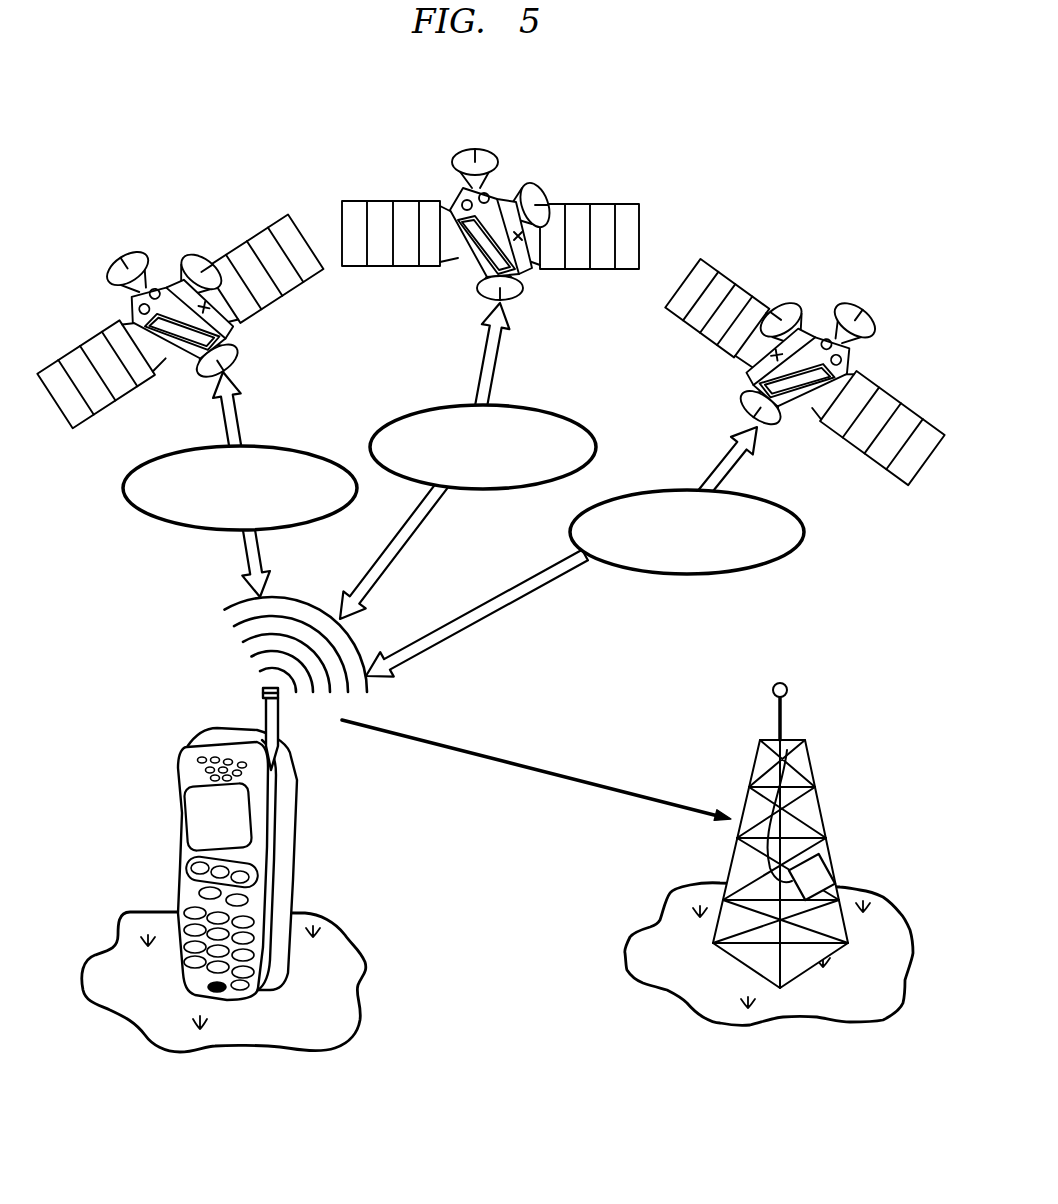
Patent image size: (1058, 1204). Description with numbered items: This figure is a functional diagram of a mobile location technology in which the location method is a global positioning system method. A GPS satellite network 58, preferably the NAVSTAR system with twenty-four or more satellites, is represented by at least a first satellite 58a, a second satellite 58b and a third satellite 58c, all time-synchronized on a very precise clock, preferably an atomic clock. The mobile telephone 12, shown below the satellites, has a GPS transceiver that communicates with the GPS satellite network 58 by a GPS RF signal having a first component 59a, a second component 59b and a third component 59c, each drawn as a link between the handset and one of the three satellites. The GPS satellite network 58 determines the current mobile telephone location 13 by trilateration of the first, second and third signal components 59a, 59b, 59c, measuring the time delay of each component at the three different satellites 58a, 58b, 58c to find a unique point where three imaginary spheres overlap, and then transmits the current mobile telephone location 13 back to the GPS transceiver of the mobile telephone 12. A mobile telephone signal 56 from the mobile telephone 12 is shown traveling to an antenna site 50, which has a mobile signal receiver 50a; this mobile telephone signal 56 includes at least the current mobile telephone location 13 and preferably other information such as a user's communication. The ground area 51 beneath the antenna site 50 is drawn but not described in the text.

The GPS satellite network 58 is at (268, 145).
The first satellite 58a is at (172, 262).
The second satellite 58b is at (510, 203).
The third satellite 58c is at (816, 340).
The first component 59a is at (245, 420).
The second component 59b is at (495, 374).
The third component 59c is at (713, 463).
The mobile telephone signal 56 is at (300, 610).
The mobile telephone 12 is at (287, 827).
The current mobile telephone location 13 is at (358, 922).
The antenna site 50 is at (812, 742).
The mobile signal receiver 50a is at (828, 866).
The second location 51 is at (650, 931).